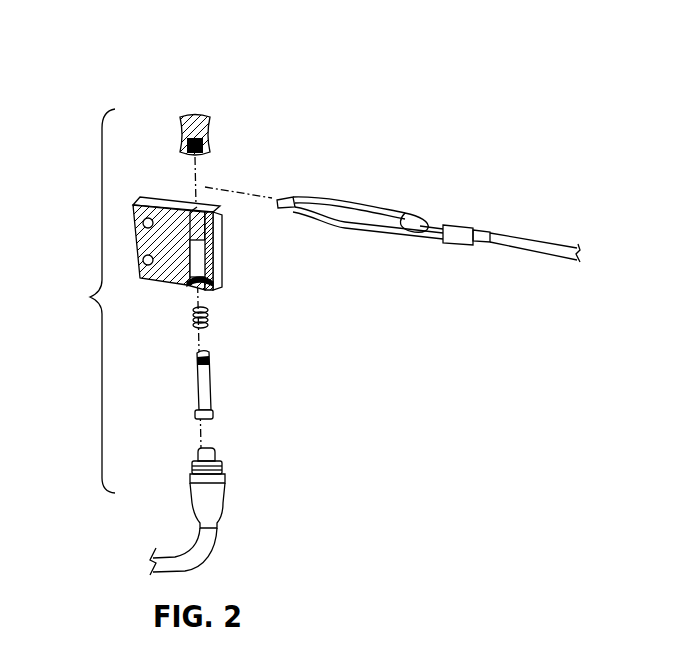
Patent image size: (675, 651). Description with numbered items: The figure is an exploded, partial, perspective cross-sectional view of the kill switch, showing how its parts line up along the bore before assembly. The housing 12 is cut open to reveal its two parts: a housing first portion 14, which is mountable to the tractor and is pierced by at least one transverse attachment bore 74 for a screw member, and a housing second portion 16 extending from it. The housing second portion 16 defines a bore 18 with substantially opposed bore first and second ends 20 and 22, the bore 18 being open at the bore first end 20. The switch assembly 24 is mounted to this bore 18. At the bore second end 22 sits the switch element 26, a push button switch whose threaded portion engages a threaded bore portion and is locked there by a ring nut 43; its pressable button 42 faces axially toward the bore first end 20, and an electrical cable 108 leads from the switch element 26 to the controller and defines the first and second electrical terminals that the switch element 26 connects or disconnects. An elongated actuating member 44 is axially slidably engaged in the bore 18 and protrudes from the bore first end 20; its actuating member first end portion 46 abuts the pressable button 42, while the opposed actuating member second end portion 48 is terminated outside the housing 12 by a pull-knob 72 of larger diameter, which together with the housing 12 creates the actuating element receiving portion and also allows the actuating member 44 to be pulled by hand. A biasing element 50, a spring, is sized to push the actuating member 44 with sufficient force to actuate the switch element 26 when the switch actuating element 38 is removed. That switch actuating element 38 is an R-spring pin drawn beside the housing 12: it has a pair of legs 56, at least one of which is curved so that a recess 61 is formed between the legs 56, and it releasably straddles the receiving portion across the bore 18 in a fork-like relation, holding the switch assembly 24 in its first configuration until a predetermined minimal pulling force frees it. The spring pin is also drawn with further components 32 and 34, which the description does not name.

The housing 12 is at (173, 241).
The housing first portion 14 is at (150, 270).
The housing second portion 16 is at (213, 230).
The bore 18 is at (185, 284).
The bore first end 20 is at (205, 210).
The bore second end 22 is at (210, 289).
The switch assembly 24 is at (86, 301).
The switch element 26 is at (227, 487).
The cable 32 is at (522, 243).
The eyelet 34 is at (412, 222).
The switch actuating element 38 is at (434, 196).
The pressable button 42 is at (256, 519).
The ring nut 43 is at (195, 466).
The actuating member 44 is at (232, 413).
The actuating member first end portion 46 is at (198, 423).
The actuating member second end portion 48 is at (198, 360).
The biasing element 50 is at (208, 327).
The legs 56 is at (395, 210).
The recess 61 is at (310, 205).
The pull-knob 72 is at (205, 118).
The attachment bore 74 is at (144, 221).
The electrical cable 108 is at (208, 555).